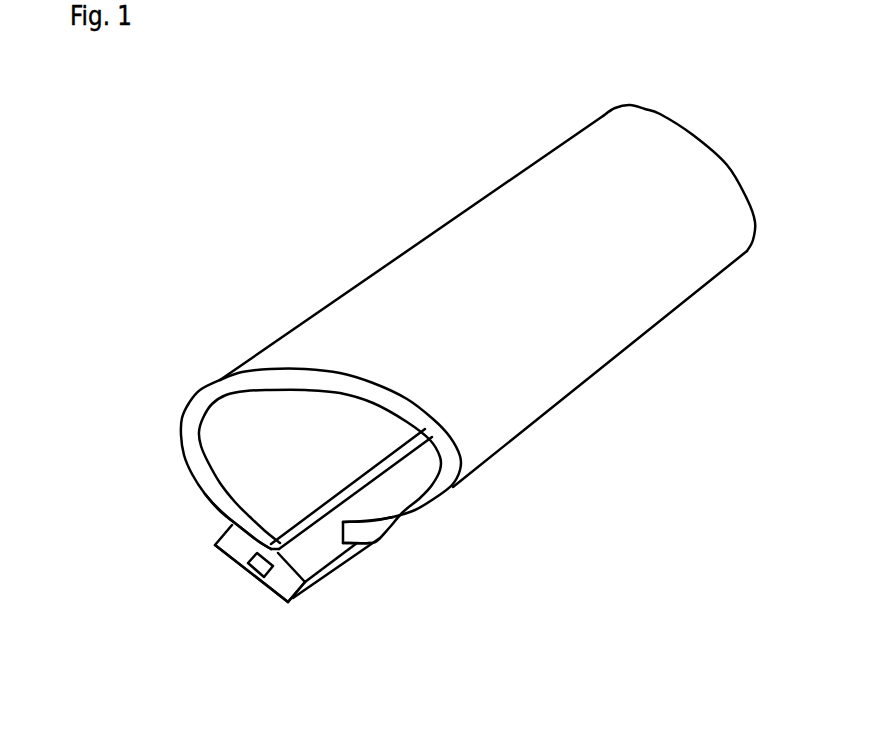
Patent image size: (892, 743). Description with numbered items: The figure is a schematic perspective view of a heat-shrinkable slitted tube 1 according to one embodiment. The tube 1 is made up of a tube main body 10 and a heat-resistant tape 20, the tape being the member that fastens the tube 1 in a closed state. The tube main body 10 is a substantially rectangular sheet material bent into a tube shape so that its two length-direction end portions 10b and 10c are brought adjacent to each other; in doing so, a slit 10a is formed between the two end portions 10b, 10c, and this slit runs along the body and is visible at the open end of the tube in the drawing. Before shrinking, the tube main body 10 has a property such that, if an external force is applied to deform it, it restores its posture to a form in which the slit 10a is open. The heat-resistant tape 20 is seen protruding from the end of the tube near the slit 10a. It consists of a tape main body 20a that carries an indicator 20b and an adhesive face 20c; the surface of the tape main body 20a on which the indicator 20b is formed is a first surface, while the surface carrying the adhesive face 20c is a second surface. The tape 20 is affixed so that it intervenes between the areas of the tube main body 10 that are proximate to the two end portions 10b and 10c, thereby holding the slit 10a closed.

The heat-shrinkable slitted tube 1 is at (322, 174).
The tube main body 10 is at (697, 250).
The slit 10a is at (308, 521).
The length-direction end portion 10b is at (237, 513).
The length-direction end portion 10c is at (356, 532).
The heat-resistant tape 20 is at (200, 584).
The tape main body 20a is at (278, 582).
The indicator 20b is at (255, 578).
The adhesive face 20c is at (301, 551).